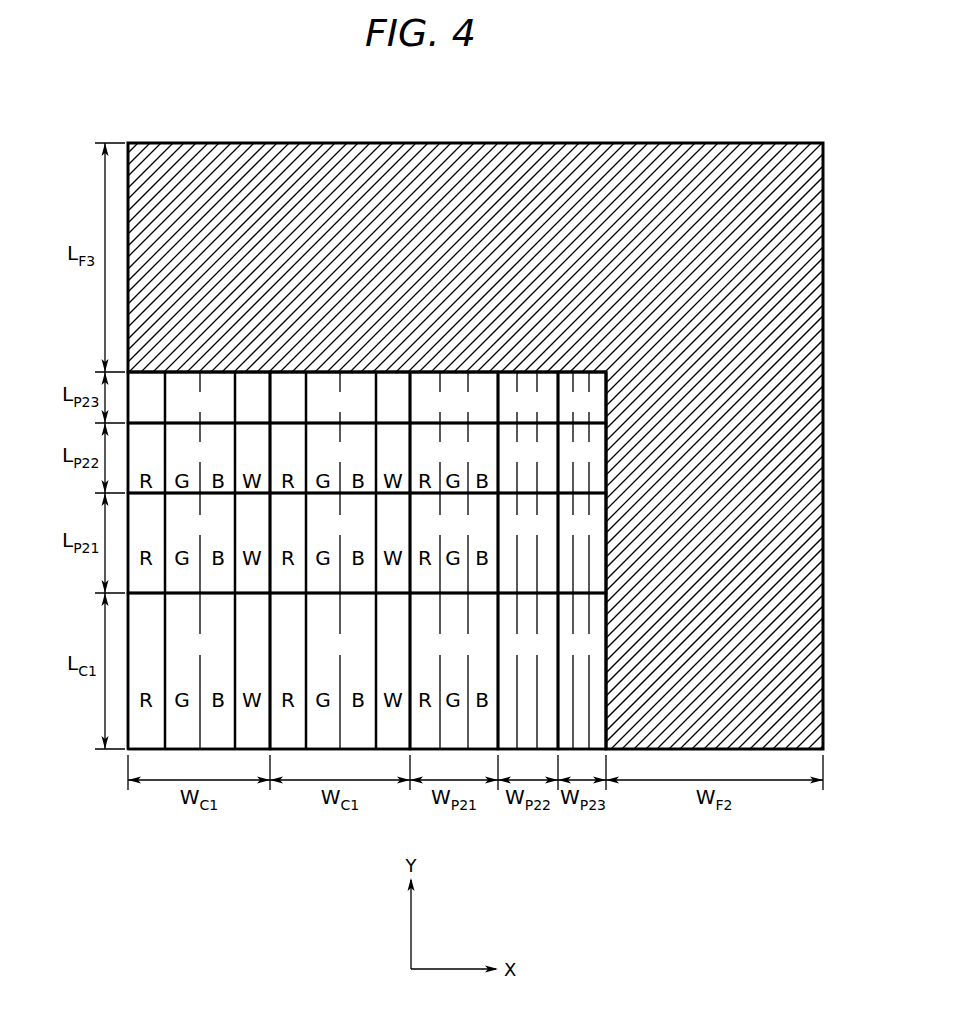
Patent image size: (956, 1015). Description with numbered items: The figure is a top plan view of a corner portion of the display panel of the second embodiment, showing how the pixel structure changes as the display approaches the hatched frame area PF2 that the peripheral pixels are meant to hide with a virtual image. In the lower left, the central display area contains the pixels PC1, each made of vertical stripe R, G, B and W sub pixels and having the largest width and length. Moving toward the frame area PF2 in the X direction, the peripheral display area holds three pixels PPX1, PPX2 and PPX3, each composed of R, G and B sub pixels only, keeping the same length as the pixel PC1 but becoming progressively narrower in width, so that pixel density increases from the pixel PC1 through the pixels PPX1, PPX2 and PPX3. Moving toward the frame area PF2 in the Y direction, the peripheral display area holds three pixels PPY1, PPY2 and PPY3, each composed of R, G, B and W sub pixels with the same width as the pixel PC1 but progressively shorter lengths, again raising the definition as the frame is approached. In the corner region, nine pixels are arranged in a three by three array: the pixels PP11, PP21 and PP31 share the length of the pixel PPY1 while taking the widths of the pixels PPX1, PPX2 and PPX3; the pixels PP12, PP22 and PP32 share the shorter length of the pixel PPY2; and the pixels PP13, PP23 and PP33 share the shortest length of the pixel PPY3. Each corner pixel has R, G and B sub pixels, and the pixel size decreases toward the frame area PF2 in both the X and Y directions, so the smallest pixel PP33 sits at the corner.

The frame area PF2 is at (512, 158).
The pixel PC1 is at (269, 671).
The pixel PPY1 is at (269, 543).
The pixel PPY2 is at (269, 458).
The pixel PPY3 is at (269, 397).
The pixel PPX1 is at (454, 671).
The pixel PPX2 is at (528, 671).
The pixel PPX3 is at (582, 671).
The pixel PP11 is at (454, 543).
The pixel PP12 is at (454, 458).
The pixel PP13 is at (454, 397).
The pixel PP21 is at (528, 543).
The pixel PP22 is at (528, 458).
The pixel PP23 is at (528, 397).
The pixel PP31 is at (582, 543).
The pixel PP32 is at (582, 458).
The pixel PP33 is at (582, 397).